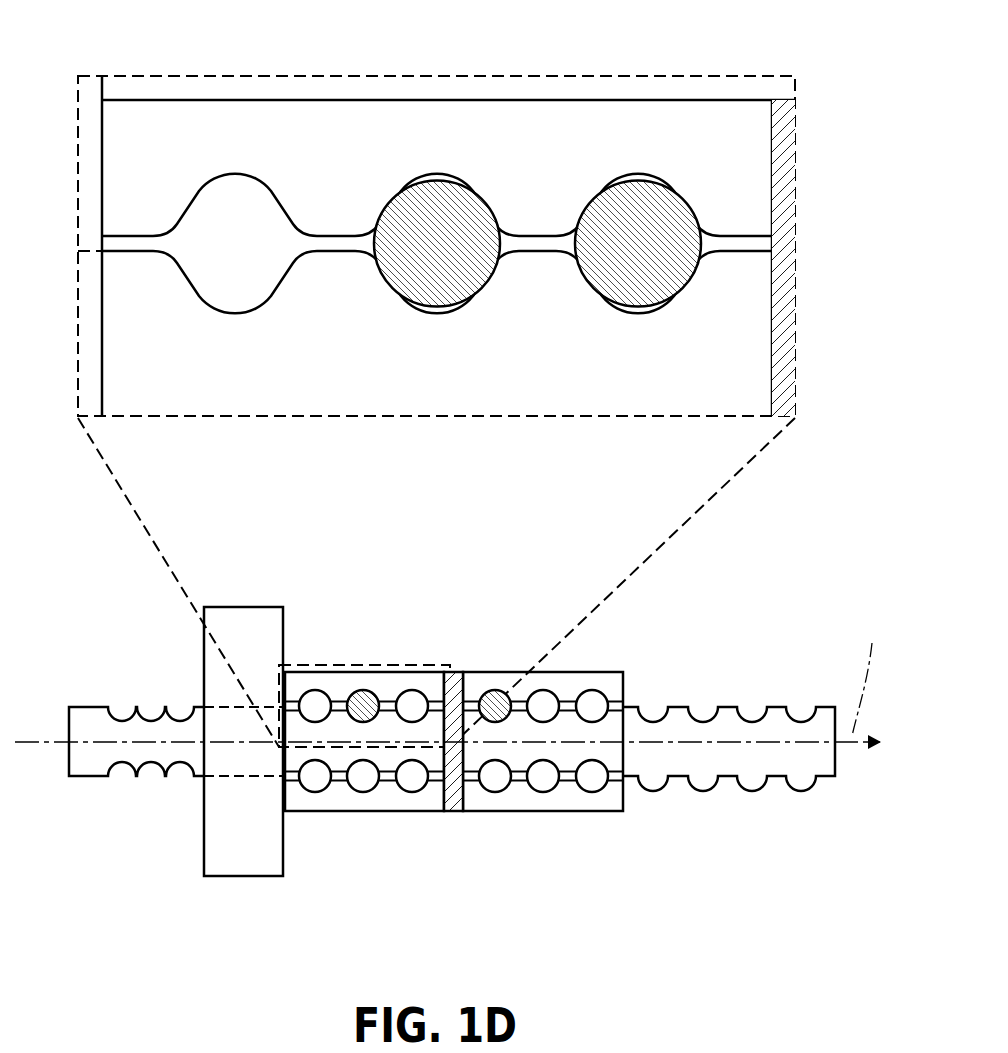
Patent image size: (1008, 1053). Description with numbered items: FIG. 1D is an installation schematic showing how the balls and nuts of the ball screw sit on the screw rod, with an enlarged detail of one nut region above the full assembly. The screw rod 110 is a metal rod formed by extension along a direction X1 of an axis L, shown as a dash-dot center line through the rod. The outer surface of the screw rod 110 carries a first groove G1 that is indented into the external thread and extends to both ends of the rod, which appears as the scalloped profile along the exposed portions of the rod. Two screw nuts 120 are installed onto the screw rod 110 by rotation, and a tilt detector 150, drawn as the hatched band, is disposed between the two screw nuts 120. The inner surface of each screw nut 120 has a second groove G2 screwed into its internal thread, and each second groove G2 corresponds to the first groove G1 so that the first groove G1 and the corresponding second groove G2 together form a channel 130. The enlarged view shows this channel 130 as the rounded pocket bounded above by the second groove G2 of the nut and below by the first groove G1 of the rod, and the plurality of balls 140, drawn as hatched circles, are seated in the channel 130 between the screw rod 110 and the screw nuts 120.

The screw rod 110 is at (592, 382).
The screw nuts 120 is at (743, 127).
The channel 130 is at (240, 233).
The balls 140 is at (627, 217).
The tilt detector 150 is at (455, 690).
The first groove G1 is at (217, 308).
The second groove G2 is at (203, 192).
The axis L is at (865, 673).
The direction X1 is at (464, 740).